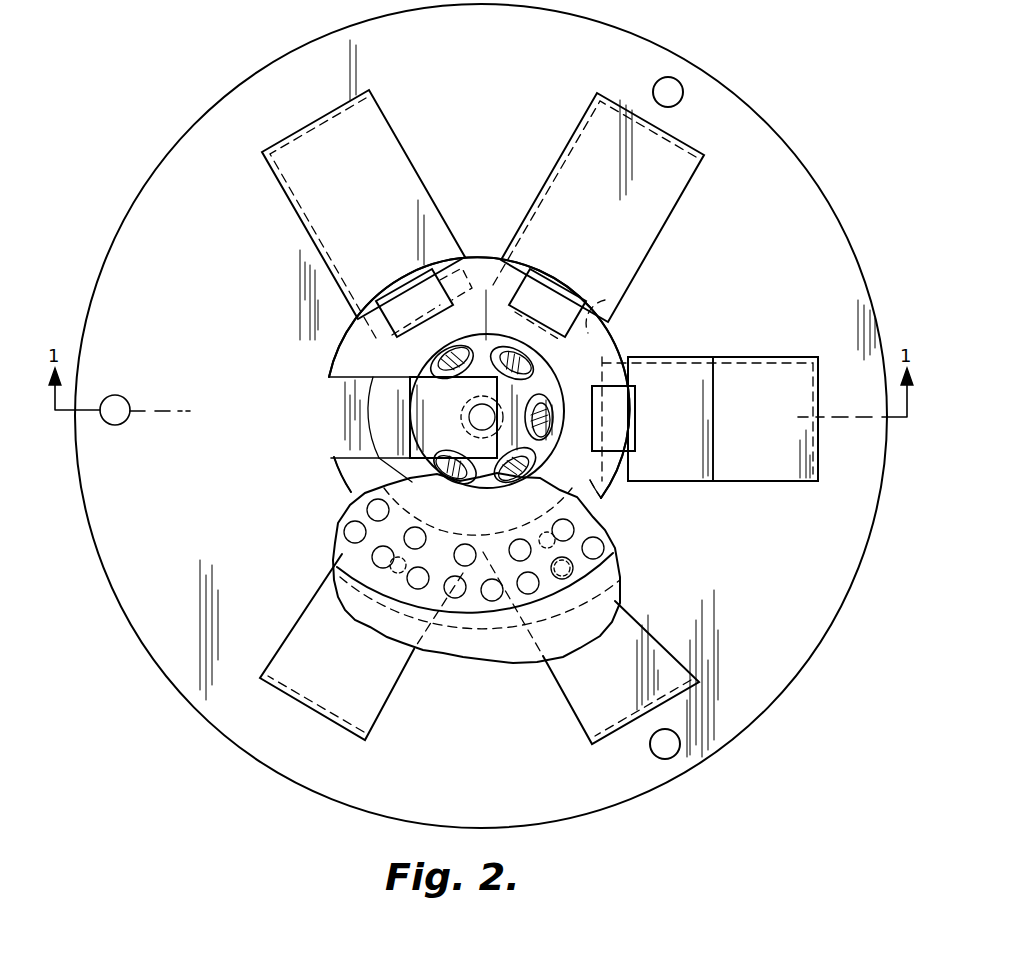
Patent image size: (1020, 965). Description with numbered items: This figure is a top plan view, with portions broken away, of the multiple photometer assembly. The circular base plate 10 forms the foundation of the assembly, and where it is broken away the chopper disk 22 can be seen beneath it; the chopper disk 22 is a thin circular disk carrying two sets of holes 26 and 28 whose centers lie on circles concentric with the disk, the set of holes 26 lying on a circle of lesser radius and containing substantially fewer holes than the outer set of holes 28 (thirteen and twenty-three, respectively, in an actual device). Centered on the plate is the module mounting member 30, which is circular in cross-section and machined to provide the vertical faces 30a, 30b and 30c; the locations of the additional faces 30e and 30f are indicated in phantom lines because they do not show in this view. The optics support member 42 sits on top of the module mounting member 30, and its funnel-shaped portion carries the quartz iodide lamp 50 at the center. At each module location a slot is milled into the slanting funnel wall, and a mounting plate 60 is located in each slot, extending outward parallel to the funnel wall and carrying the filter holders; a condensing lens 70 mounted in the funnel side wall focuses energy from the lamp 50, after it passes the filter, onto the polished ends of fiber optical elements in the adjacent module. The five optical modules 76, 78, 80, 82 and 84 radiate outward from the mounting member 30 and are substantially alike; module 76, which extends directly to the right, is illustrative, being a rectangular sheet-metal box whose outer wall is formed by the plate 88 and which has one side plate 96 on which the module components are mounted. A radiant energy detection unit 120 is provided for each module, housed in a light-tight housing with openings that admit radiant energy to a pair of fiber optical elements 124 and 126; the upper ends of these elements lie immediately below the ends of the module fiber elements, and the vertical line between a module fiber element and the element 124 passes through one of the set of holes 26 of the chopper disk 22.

The base plate 10 is at (782, 603).
The chopper disk 22 is at (500, 613).
The set of holes 26 is at (404, 538).
The set of holes 28 is at (492, 595).
The module mounting member 30 is at (337, 438).
The vertical face 30a is at (612, 488).
The vertical face 30b is at (604, 302).
The vertical face 30c is at (462, 272).
The vertical face 30e is at (412, 520).
The vertical face 30f is at (512, 530).
The optics support member 42 is at (612, 348).
The lamp 50 is at (462, 420).
The mounting plate 60 is at (420, 294).
The condensing lens 70 is at (548, 398).
The optical module 76 is at (748, 431).
The optical module 78 is at (612, 218).
The optical module 80 is at (371, 213).
The optical module 82 is at (346, 675).
The optical module 84 is at (624, 677).
The outer wall plate 88 is at (818, 398).
The side plate 96 is at (713, 357).
The radiant energy detection unit 120 is at (336, 525).
The fiber optical element 124 is at (417, 533).
The fiber optical element 126 is at (395, 562).